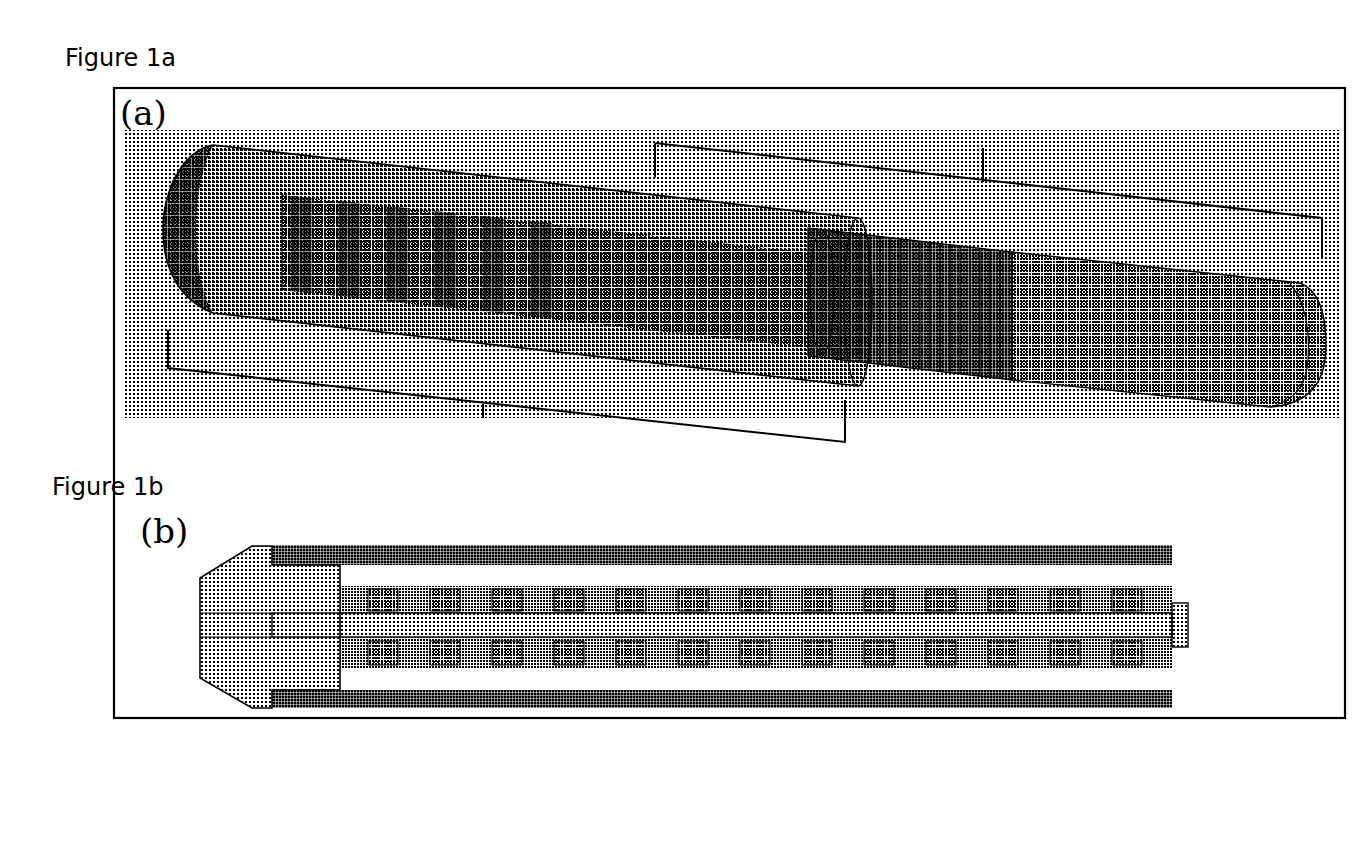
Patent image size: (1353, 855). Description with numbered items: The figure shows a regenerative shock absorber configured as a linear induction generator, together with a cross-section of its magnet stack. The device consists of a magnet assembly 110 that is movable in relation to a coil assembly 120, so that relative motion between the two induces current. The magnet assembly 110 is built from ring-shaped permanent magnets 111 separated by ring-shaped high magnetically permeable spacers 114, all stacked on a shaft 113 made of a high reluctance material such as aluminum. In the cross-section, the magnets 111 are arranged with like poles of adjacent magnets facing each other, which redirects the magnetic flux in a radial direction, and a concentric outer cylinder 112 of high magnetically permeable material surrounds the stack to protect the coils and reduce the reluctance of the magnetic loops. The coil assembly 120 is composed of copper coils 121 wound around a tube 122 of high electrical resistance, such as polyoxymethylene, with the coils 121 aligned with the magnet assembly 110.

In FIG. 1A, the magnet assembly 110 is at (517, 323).
In FIG. 1B, the permanent magnets 111 is at (435, 665).
In FIG. 1B, the outer cylinder 112 is at (592, 710).
In FIG. 1B, the shaft 113 is at (952, 628).
In FIG. 1B, the spacers 114 is at (743, 653).
In FIG. 1A, the coil assembly 120 is at (990, 291).
In FIG. 1A, the coils 121 is at (1003, 375).
In FIG. 1A, the tube 122 is at (1178, 380).